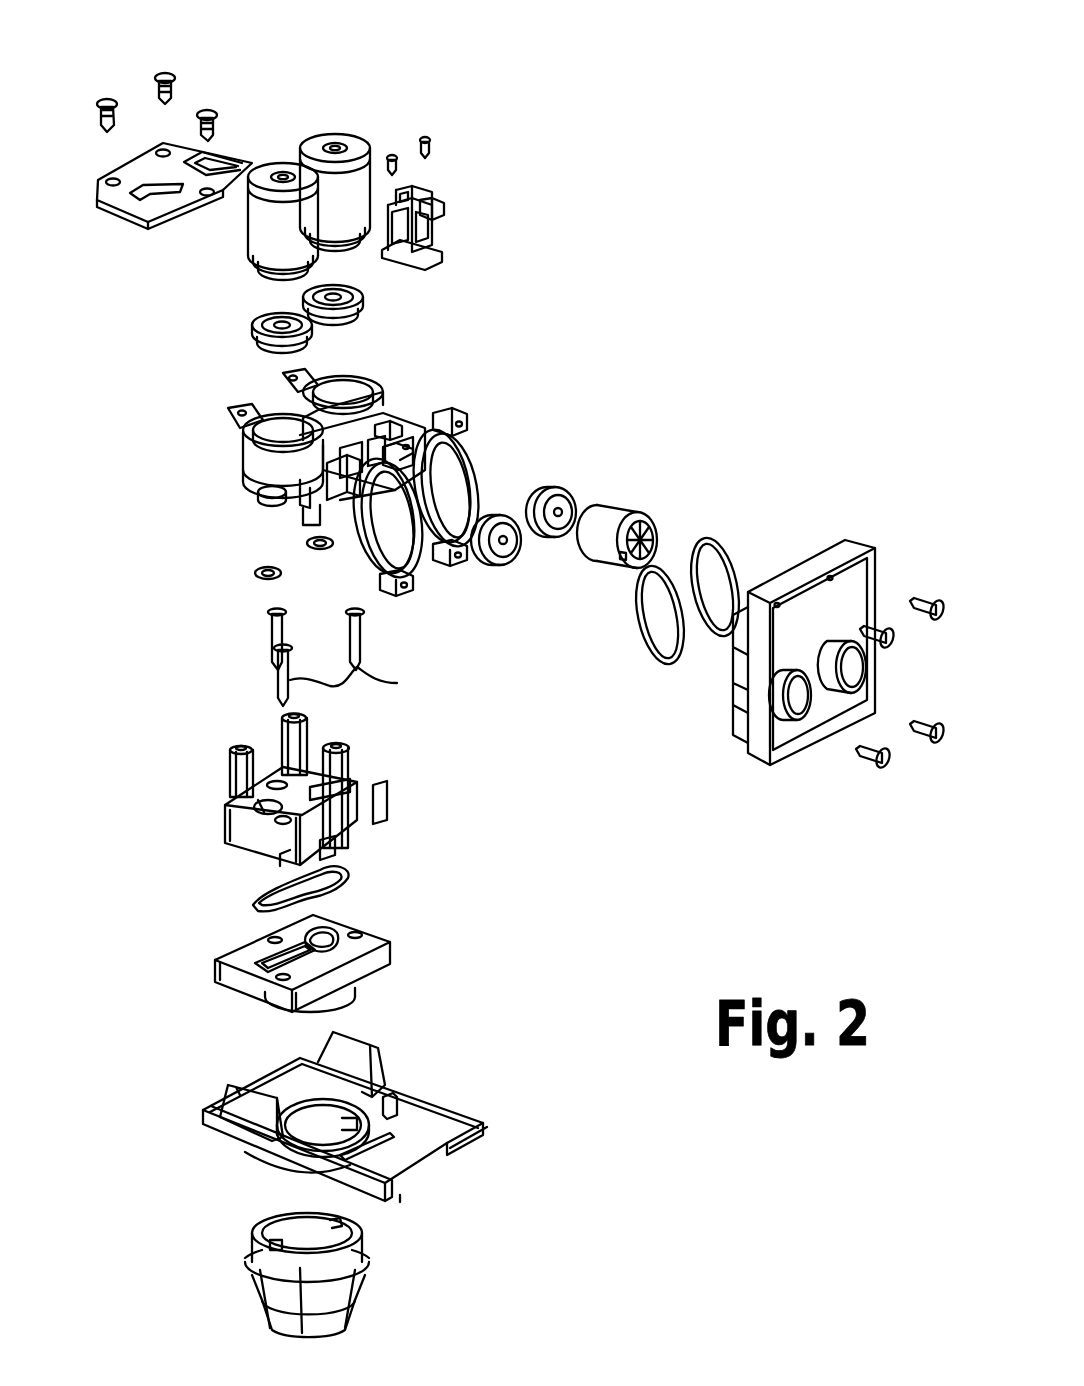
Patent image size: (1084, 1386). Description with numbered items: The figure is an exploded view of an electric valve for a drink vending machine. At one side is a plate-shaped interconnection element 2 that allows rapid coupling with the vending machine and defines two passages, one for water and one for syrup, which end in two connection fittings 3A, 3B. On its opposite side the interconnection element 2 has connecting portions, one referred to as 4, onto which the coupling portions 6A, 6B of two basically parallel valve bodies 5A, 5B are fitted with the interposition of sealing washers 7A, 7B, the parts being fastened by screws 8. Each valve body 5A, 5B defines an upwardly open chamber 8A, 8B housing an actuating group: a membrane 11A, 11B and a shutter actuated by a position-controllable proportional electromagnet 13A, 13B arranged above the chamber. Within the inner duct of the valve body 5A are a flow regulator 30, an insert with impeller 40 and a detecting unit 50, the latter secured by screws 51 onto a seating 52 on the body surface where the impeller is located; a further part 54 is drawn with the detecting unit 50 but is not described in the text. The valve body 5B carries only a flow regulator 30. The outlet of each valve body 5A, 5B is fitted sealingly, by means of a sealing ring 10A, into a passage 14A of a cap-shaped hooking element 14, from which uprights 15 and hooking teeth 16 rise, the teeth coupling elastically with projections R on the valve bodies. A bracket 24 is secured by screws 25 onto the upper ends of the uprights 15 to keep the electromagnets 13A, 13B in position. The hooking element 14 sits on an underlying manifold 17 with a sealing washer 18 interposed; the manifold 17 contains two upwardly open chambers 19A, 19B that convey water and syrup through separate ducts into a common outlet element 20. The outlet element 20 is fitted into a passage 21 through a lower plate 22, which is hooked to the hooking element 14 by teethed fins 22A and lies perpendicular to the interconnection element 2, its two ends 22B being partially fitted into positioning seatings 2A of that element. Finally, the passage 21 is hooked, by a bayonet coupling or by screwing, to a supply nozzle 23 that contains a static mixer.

The interconnection element 2 is at (857, 533).
The positioning seating 2A is at (742, 738).
The connection fitting 3A is at (851, 693).
The connection fitting 3B is at (798, 720).
The connecting portion 4 is at (730, 700).
The valve body 5A is at (392, 400).
The valve body 5B is at (245, 468).
The coupling portion 6A is at (470, 452).
The coupling portion 6B is at (398, 578).
The sealing washer 7A is at (722, 540).
The sealing washer 7B is at (647, 655).
The screws 8 is at (895, 648).
The chamber 8A is at (342, 387).
The chamber 8B is at (278, 433).
The sealing ring 10A is at (320, 552).
The membrane 11A is at (365, 305).
The membrane 11B is at (252, 337).
The actuator 13A is at (333, 140).
The actuator 13B is at (250, 236).
The hooking element 14 is at (208, 822).
The passage 14A is at (263, 812).
The uprights 15 is at (233, 780).
The hooking teeth 16 is at (388, 790).
The manifold 17 is at (392, 957).
The sealing washer 18 is at (340, 878).
The chamber 19A is at (332, 930).
The chamber 19B is at (263, 960).
The outlet element 20 is at (355, 997).
The passage 21 is at (308, 1123).
The lower plate 22 is at (205, 1140).
The teethed fins 22A is at (380, 1072).
The ends 22B is at (400, 1200).
The supply nozzle 23 is at (382, 1277).
The bracket 24 is at (95, 200).
The screws 25 is at (160, 74).
The flow regulator 30 is at (497, 570).
The insert with impeller 40 is at (625, 498).
The detecting unit 50 is at (433, 262).
The screws 51 is at (426, 135).
The seating 52 is at (412, 427).
The connector terminal 54 is at (443, 208).
The projections R is at (305, 517).